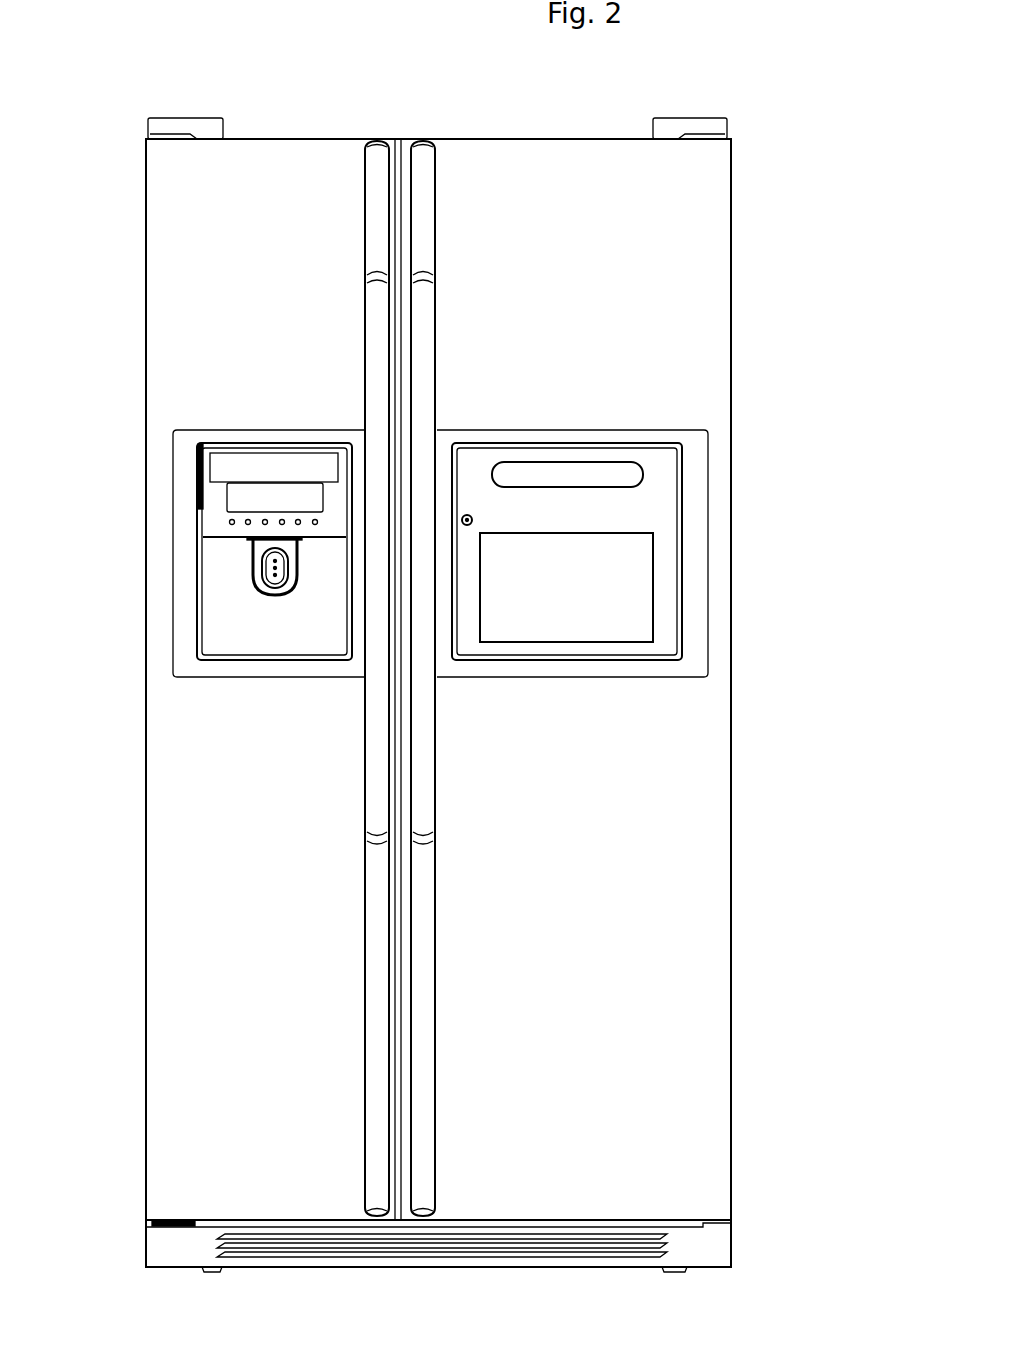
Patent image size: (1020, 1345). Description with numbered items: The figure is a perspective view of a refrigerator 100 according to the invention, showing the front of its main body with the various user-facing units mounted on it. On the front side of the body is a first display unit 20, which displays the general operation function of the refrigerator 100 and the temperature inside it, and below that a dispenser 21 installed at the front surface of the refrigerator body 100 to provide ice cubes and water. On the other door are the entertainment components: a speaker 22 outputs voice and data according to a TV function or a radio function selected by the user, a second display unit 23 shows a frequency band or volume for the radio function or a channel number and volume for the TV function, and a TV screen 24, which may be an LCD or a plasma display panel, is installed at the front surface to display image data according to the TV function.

The refrigerator 100 is at (800, 223).
The first display unit 20 is at (217, 467).
The dispenser 21 is at (217, 580).
The speaker 22 is at (472, 520).
The second display unit 23 is at (635, 473).
The TV screen 24 is at (635, 617).